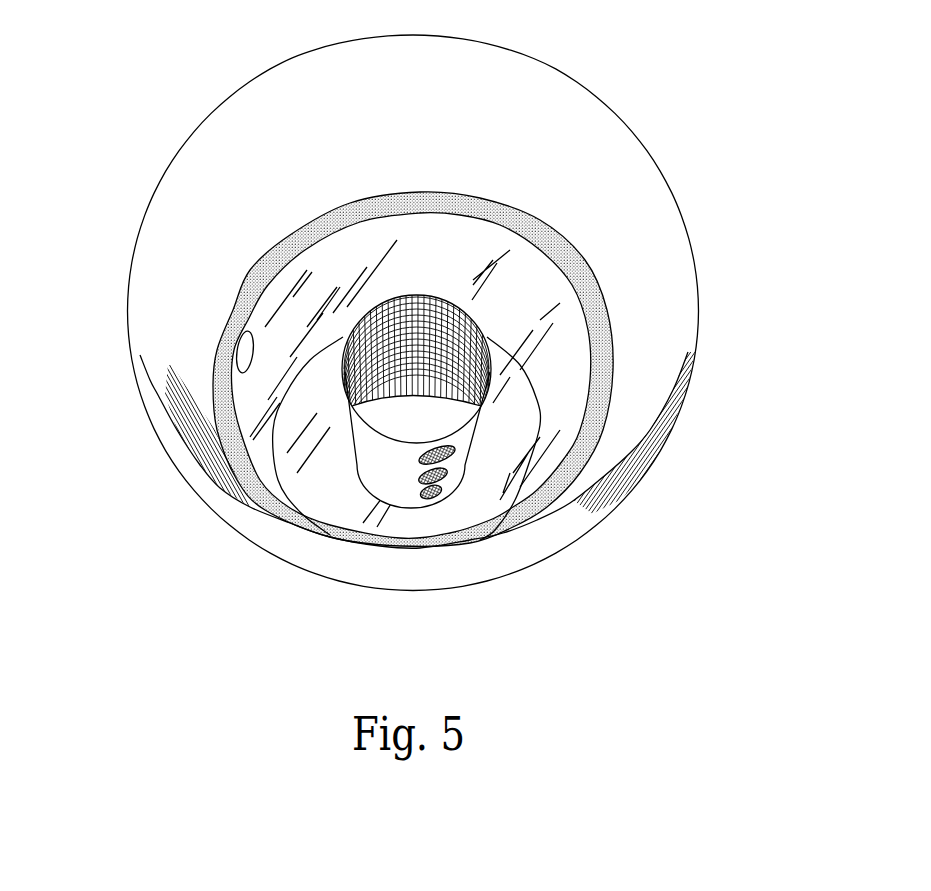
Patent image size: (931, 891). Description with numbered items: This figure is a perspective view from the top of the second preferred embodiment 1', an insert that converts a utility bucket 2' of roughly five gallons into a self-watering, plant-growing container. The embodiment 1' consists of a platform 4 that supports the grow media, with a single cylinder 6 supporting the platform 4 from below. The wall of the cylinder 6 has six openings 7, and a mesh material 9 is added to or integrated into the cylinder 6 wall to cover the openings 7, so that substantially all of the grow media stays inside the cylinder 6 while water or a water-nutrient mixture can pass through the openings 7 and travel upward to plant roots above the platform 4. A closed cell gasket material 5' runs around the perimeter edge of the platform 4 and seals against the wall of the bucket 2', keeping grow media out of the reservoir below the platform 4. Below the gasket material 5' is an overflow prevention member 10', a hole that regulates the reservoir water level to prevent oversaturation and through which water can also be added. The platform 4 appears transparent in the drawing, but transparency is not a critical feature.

The second preferred embodiment 1' is at (413, 313).
The 5-gallon bucket 2' is at (415, 430).
The platform 4 is at (543, 297).
The closed cell gasket material 5' is at (487, 369).
The cylinder 6 is at (433, 394).
The openings 7 is at (452, 460).
The mesh material 9 is at (442, 322).
The overflow prevention member 10' is at (209, 307).